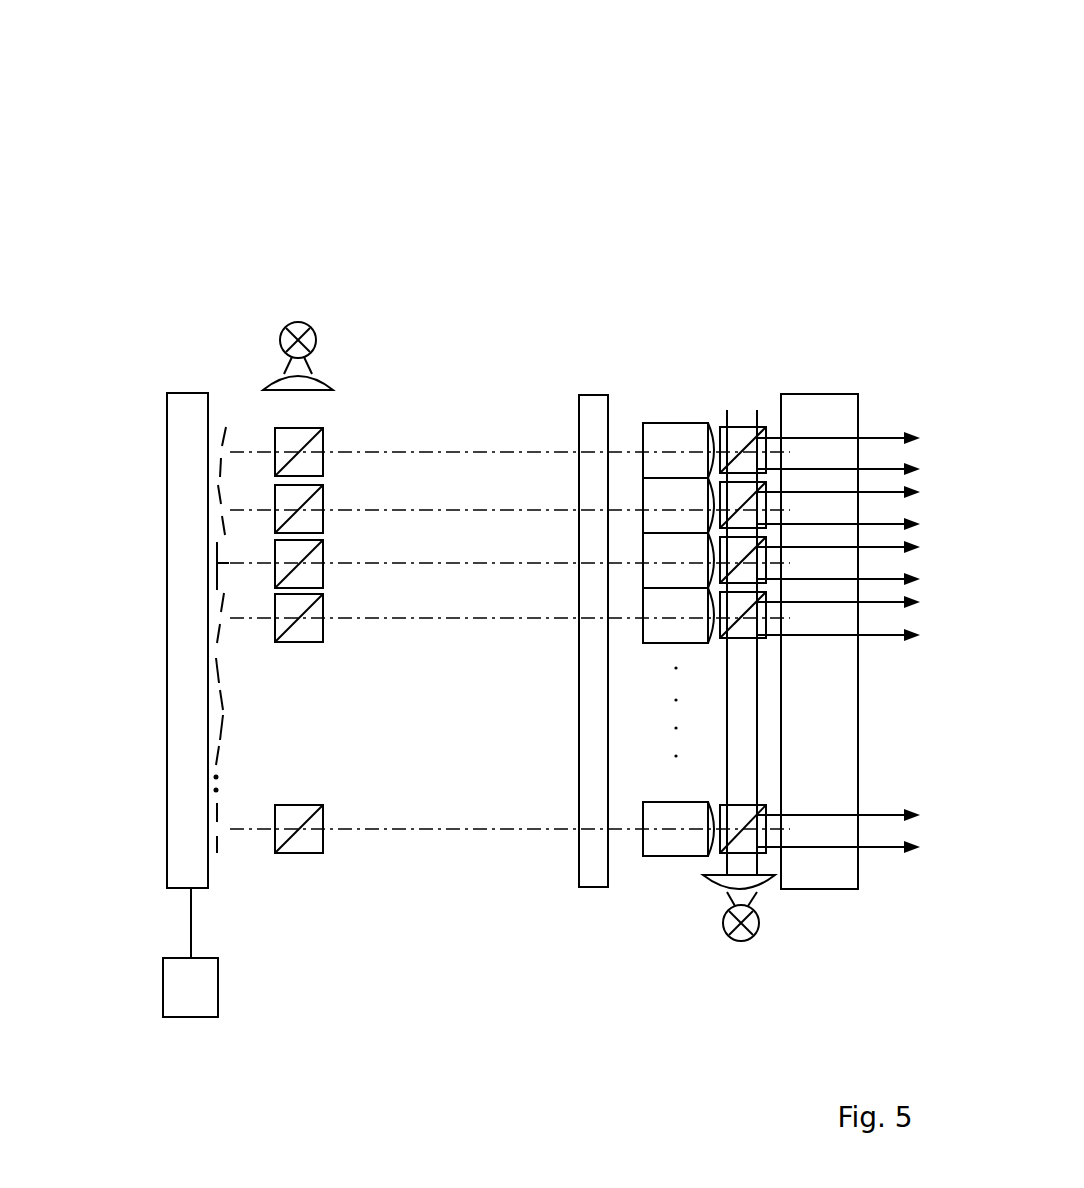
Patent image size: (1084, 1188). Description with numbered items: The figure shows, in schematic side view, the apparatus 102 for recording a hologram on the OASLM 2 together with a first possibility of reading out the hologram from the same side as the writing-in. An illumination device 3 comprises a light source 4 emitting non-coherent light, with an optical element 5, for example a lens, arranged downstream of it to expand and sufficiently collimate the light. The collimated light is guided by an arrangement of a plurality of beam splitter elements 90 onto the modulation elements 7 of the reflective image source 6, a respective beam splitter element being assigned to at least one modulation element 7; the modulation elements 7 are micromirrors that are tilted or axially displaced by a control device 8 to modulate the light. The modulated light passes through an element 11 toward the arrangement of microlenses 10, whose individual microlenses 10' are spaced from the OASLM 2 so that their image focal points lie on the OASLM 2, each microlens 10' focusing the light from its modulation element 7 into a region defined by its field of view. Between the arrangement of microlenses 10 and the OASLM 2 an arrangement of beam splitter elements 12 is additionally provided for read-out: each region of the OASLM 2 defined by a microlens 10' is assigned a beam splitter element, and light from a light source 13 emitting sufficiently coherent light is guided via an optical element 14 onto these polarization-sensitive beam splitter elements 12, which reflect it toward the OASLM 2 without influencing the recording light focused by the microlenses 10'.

The apparatus 102 is at (578, 93).
The OASLM 2 is at (824, 420).
The illumination device 3 is at (218, 283).
The light source 4 is at (298, 323).
The optical element 5 is at (273, 382).
The image source 6 is at (185, 807).
The modulation element 7 is at (225, 445).
The control device 8 is at (190, 952).
The beam splitter elements 90 is at (299, 895).
The transparent plate 11 is at (600, 415).
The arrangement of microlenses 10 is at (677, 939).
The microlens 10' is at (659, 697).
The arrangement of beam splitter elements 12 is at (737, 390).
The light source 13 is at (741, 935).
The optical element 14 is at (760, 880).